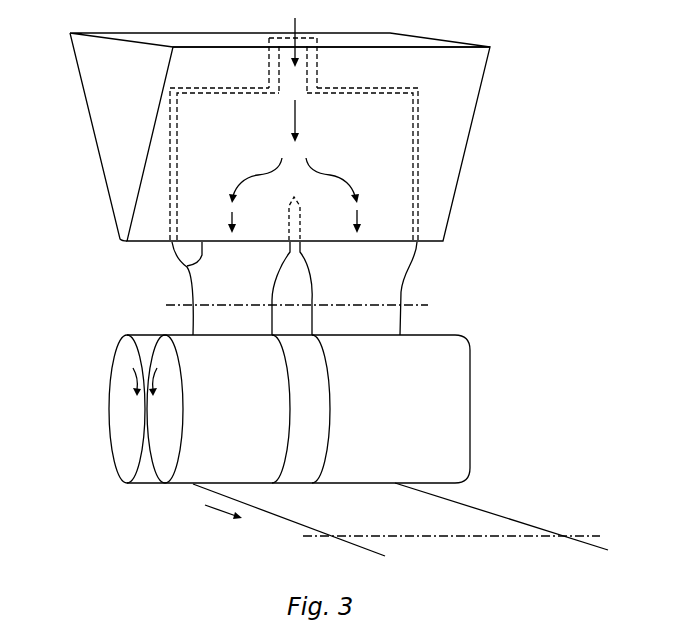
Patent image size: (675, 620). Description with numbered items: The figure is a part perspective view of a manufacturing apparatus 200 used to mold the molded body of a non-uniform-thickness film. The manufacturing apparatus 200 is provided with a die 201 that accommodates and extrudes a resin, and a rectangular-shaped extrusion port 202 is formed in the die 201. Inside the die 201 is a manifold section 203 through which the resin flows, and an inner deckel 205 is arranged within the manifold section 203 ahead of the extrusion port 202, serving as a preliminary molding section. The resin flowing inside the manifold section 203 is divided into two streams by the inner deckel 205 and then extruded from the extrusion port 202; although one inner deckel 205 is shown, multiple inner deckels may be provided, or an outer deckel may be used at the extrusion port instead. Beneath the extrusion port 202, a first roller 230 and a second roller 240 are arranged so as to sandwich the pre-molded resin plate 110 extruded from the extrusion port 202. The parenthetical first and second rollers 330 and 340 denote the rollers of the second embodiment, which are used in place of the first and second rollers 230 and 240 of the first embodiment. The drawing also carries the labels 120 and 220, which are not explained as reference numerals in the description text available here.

The manufacturing apparatus 200 is at (527, 47).
The die 201 is at (115, 155).
The extrusion port 202 is at (187, 266).
The manifold section 203 is at (403, 115).
The inner deckel 205 is at (294, 230).
The pre-molded resin plate 110 is at (397, 287).
The transport belt 120 is at (463, 520).
The transport belt 220 is at (501, 516).
The first roller 230 is at (187, 476).
The first roller 330 is at (246, 522).
The second roller 240 is at (113, 410).
The second roller 340 is at (109, 410).